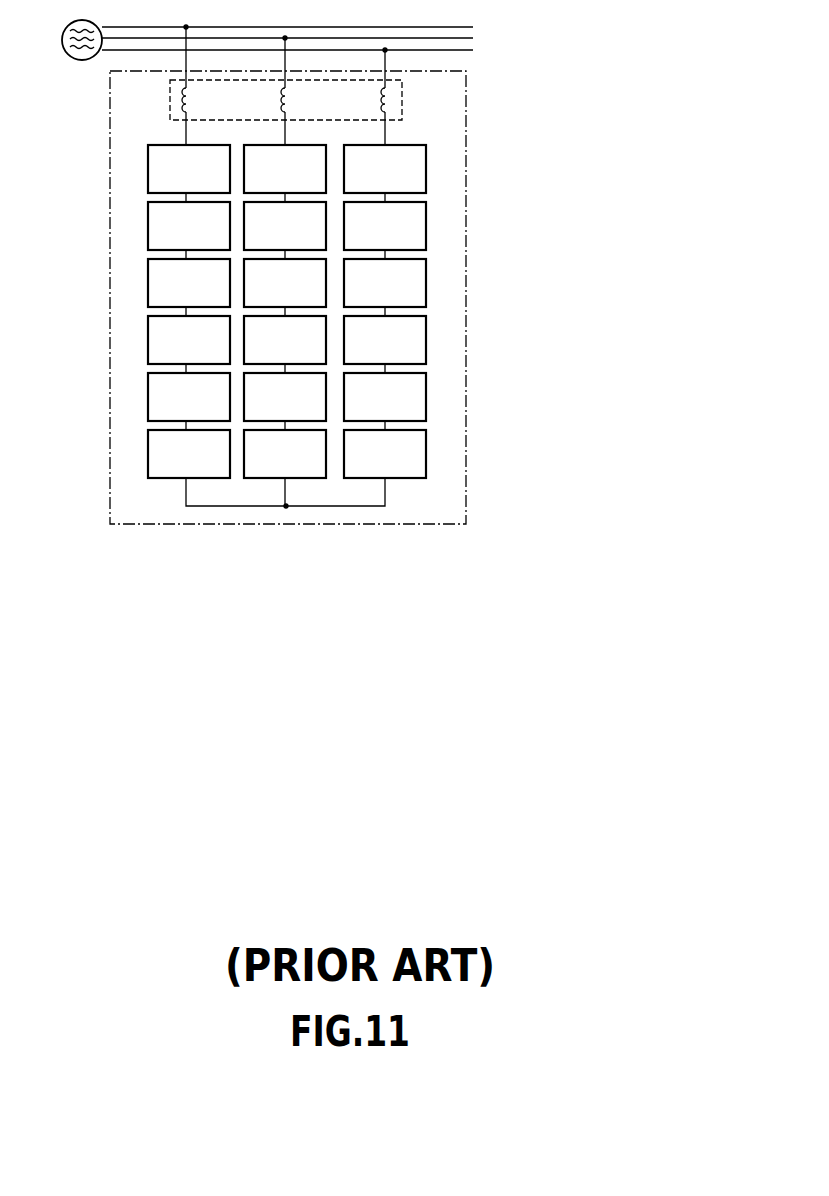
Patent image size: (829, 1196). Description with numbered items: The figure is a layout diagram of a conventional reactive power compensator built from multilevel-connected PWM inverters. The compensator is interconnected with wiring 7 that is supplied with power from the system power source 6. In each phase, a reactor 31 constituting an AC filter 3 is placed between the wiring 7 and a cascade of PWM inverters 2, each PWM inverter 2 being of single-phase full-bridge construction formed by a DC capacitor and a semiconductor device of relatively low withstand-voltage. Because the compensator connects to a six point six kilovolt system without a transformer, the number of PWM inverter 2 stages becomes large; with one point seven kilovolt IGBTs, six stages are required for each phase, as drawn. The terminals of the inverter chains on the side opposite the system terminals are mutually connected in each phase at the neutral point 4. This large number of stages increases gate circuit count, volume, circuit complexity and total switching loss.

The system power source 6 is at (62, 40).
The wiring 7 is at (229, 26).
The AC filter 3 is at (170, 100).
The reactor 31 is at (189, 100).
The PWM inverter 2 is at (148, 171).
The neutral point 4 is at (285, 506).